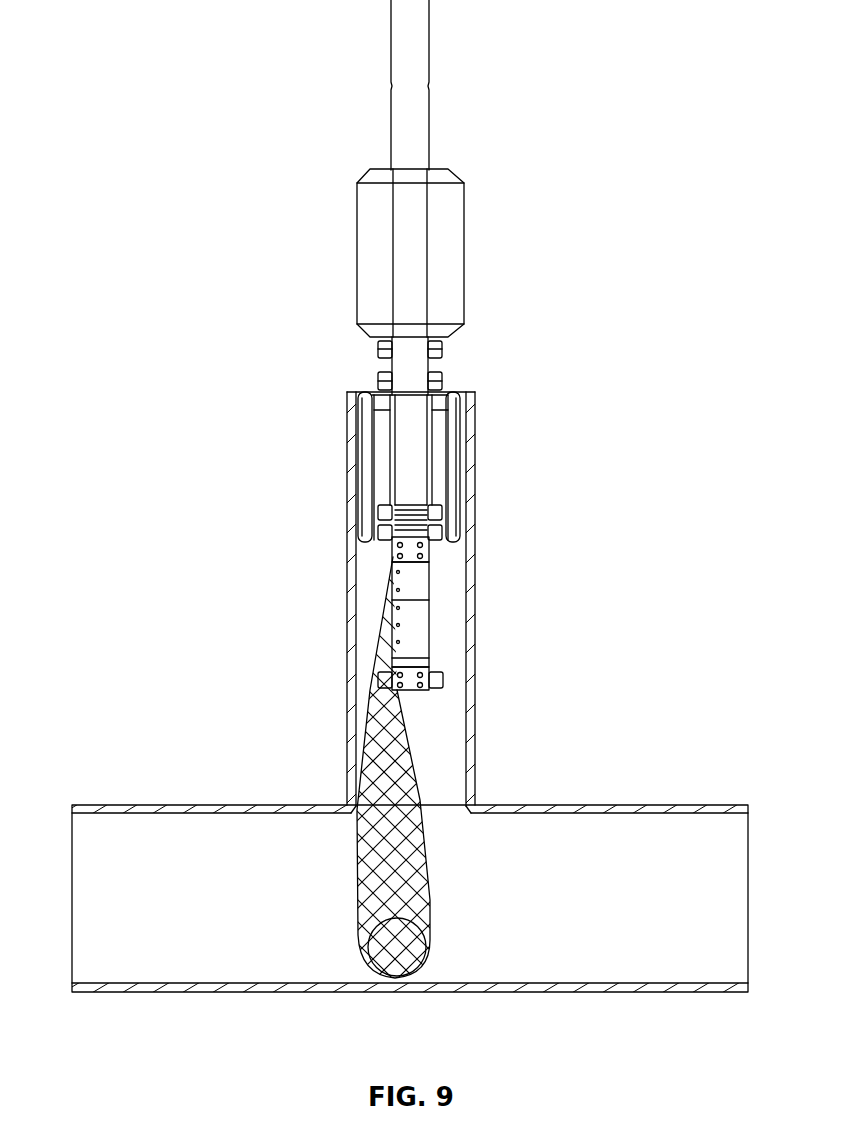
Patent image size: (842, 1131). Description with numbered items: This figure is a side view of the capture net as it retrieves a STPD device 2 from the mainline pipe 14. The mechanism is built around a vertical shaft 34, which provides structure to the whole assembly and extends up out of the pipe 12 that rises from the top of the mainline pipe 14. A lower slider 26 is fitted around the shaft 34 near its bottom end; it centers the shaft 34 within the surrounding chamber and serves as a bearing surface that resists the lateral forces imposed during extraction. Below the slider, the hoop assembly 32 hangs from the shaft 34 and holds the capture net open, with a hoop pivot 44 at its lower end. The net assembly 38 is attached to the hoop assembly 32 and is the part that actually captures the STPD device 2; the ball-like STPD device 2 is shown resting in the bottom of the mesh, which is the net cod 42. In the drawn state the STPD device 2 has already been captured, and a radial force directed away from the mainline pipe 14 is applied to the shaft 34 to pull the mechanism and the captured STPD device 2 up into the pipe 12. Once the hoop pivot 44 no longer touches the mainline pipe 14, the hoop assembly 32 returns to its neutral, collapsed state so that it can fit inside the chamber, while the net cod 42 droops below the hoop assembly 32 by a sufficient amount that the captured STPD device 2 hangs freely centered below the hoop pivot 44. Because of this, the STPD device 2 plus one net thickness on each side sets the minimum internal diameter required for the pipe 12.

The STPD device 2 is at (355, 945).
The pipe 12 is at (490, 452).
The mainline pipe 14 is at (660, 796).
The lower slider 26 is at (480, 424).
The hoop assembly 32 is at (450, 597).
The shaft 34 is at (438, 46).
The net assembly 38 is at (352, 778).
The net cod 42 is at (424, 969).
The hoop pivot 44 is at (462, 686).